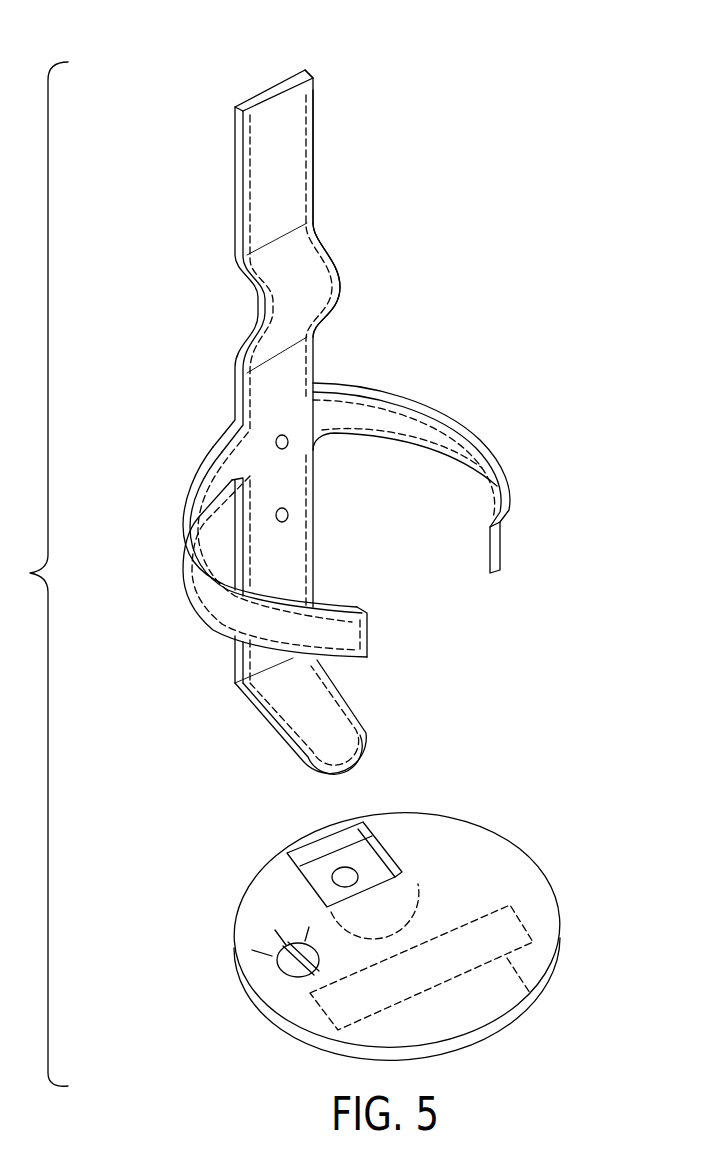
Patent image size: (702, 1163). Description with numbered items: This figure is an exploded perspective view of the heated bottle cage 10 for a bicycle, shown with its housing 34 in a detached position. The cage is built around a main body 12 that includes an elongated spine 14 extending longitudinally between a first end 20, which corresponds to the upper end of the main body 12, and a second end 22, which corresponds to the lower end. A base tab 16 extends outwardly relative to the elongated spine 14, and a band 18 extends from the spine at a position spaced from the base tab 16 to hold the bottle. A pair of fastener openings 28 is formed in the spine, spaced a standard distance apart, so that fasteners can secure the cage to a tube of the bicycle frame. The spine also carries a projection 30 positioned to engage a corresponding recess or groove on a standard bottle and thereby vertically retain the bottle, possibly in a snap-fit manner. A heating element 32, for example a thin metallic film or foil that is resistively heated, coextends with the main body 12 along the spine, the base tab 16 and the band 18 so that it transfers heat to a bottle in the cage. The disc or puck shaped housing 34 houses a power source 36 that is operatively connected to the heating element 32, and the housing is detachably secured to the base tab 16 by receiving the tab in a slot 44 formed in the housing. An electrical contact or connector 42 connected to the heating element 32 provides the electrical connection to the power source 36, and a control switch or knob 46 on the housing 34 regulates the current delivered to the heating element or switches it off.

The heated bottle cage 10 is at (122, 66).
The main body 12 is at (328, 106).
The elongated spine 14 is at (316, 206).
The base tab 16 is at (368, 719).
The band 18 is at (455, 405).
The first end 20 is at (268, 92).
The second end 22 is at (235, 683).
The fastener opening 28 is at (288, 446).
The projection 30 is at (322, 285).
The heating element 32 is at (268, 182).
The housing 34 is at (552, 882).
The power source 36 is at (531, 1000).
The electrical contact or connector 42 is at (338, 868).
The slot 44 is at (380, 842).
The control switch or knob 46 is at (295, 963).